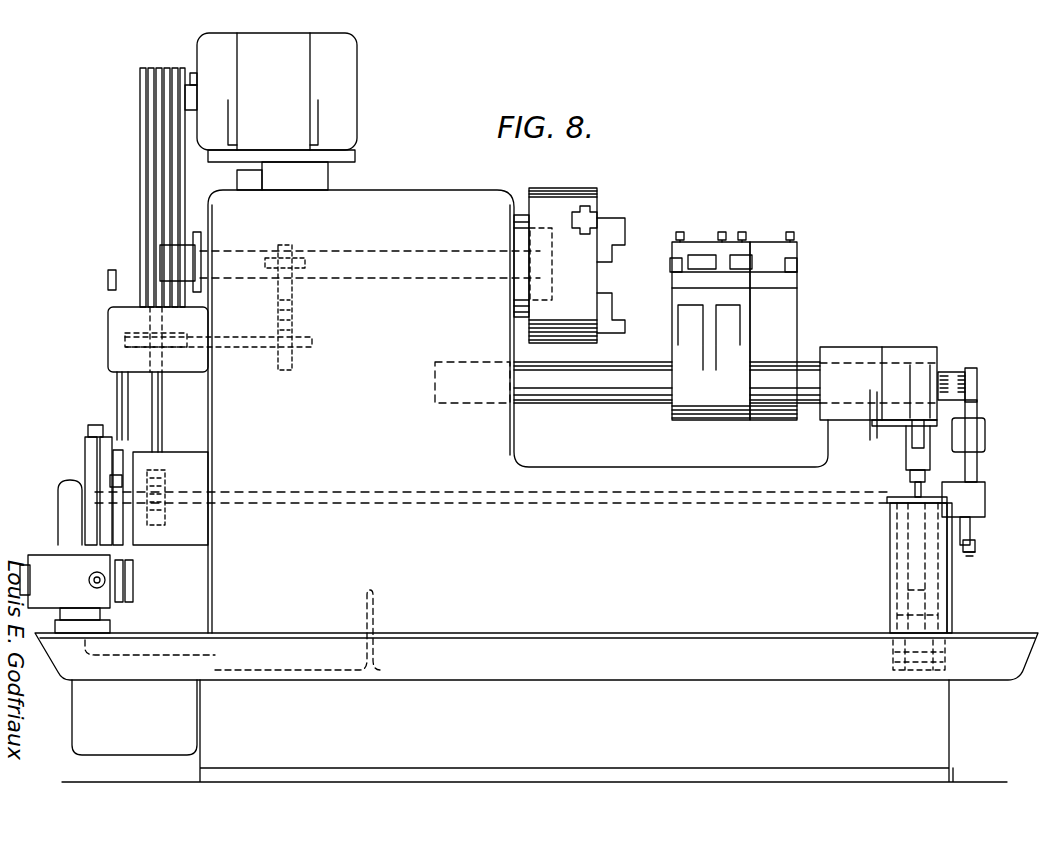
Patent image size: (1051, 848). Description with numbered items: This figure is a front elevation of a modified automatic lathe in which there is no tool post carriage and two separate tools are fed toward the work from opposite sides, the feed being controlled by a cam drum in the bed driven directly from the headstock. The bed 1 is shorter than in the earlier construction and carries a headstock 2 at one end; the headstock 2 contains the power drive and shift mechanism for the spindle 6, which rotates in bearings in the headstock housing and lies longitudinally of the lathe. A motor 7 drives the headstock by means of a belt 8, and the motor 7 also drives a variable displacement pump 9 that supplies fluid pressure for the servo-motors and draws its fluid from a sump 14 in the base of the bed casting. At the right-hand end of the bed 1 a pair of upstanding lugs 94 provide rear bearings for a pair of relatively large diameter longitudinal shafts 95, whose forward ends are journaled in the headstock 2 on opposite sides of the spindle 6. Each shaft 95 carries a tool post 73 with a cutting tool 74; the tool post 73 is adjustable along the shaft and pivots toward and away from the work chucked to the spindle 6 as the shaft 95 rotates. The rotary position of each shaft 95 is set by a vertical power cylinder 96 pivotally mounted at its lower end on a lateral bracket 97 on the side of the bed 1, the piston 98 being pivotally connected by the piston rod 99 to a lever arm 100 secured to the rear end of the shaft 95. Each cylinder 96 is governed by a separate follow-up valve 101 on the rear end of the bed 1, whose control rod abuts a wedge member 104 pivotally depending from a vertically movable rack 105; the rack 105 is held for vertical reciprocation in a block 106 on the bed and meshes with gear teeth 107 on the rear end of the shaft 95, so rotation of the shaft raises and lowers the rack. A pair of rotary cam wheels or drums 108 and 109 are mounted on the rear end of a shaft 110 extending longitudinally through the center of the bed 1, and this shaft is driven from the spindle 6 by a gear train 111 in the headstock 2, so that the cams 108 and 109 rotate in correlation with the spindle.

The bed 1 is at (567, 465).
The headstock 2 is at (410, 190).
The spindle 6 is at (165, 253).
The motor 7 is at (358, 60).
The belt 8 is at (140, 146).
The variable displacement pump 9 is at (58, 500).
The sump 14 is at (280, 625).
The tool post 73 is at (797, 298).
The cutting tool 74 is at (670, 265).
The upstanding lugs 94 is at (860, 345).
The longitudinal shafts 95 is at (637, 405).
The vertical power cylinder 96 is at (890, 560).
The lateral bracket 97 is at (915, 672).
The piston 98 is at (952, 612).
The piston rod 99 is at (908, 487).
The lever arm 100 is at (920, 385).
The follow-up valve 101 is at (985, 490).
The wedge member 104 is at (972, 524).
The rack 105 is at (977, 410).
The block 106 is at (985, 432).
The gear teeth 107 is at (978, 380).
The rotary cam wheel 108 is at (976, 545).
The rotary cam wheel 109 is at (968, 556).
The shaft 110 is at (660, 505).
The gear train 111 is at (275, 320).